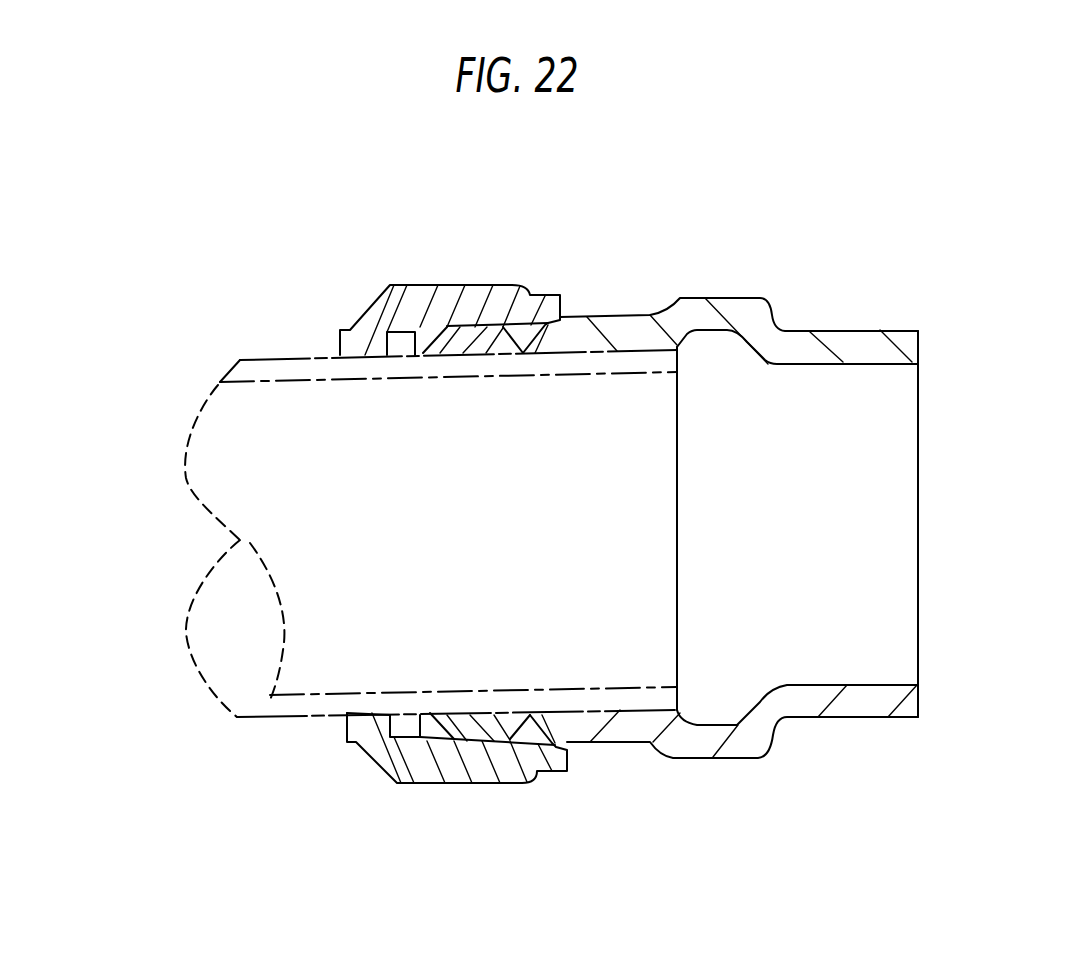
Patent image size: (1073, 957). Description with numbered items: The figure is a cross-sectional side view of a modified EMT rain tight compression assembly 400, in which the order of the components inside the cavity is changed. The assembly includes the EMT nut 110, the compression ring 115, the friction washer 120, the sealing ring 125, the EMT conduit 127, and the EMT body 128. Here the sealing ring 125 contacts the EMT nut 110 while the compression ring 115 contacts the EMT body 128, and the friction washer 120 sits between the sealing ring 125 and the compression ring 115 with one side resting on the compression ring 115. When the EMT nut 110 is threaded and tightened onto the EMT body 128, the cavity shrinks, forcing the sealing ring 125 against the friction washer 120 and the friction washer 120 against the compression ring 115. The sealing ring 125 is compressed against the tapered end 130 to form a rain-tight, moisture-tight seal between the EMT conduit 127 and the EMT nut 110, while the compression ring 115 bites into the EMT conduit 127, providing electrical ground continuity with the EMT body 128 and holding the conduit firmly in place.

The EMT nut 110 is at (413, 280).
The compression ring 115 is at (493, 322).
The friction washer 120 is at (437, 320).
The sealing ring 125 is at (388, 740).
The EMT conduit 127 is at (271, 357).
The EMT body 128 is at (922, 425).
The tapered end 130 is at (380, 729).
The EMT rain tight compression assembly 400 is at (882, 268).